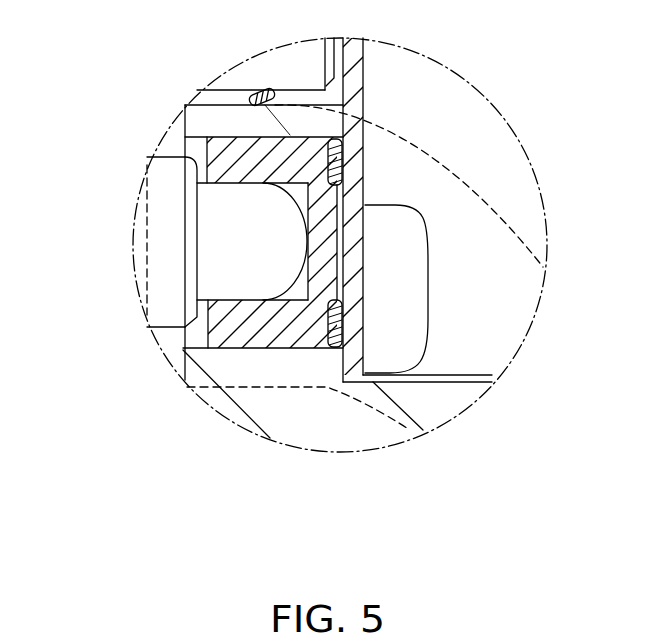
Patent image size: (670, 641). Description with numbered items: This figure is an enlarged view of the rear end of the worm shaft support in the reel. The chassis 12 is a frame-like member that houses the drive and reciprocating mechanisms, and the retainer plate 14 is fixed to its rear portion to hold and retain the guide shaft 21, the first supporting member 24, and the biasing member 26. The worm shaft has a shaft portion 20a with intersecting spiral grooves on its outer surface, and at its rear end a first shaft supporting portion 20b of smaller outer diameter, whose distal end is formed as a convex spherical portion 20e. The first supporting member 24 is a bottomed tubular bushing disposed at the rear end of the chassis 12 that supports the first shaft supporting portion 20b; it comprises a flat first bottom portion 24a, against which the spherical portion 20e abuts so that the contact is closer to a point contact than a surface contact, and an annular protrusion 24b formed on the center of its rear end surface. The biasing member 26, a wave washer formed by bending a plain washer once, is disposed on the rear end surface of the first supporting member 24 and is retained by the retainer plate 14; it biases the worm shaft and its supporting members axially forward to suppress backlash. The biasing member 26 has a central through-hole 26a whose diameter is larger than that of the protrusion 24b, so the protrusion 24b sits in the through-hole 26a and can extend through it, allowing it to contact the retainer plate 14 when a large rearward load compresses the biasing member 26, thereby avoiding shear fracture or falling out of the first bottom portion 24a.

The guide shaft 21 is at (278, 63).
The retainer plate 14 is at (363, 87).
The through-hole 26a is at (337, 212).
The spherical portion 20e is at (340, 233).
The annular protrusion 24b is at (310, 247).
The biasing member 26 is at (343, 327).
The chassis 12 is at (440, 400).
The first supporting member 24 is at (280, 360).
The first shaft supporting portion 20b is at (240, 272).
The shaft portion 20a is at (167, 297).
The first bottom portion 24a is at (305, 217).